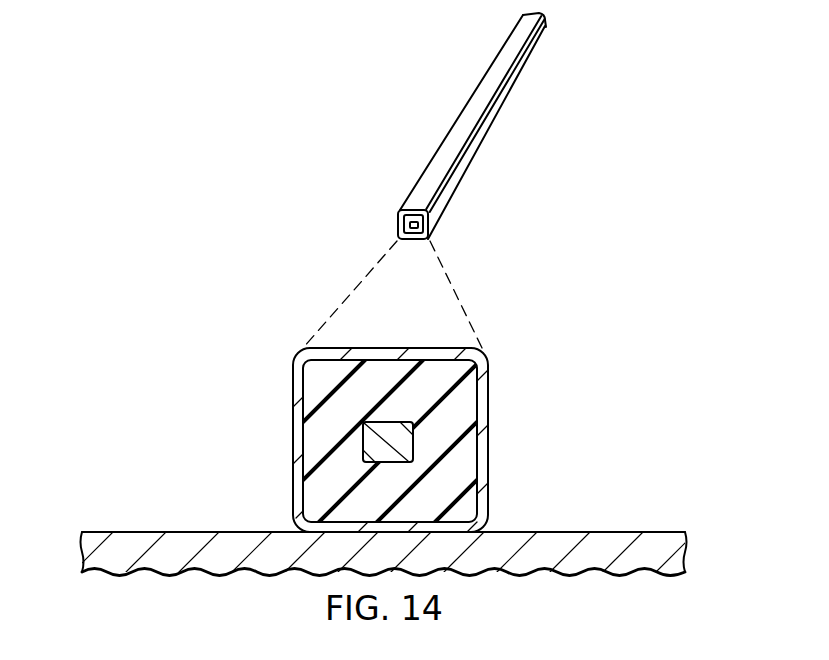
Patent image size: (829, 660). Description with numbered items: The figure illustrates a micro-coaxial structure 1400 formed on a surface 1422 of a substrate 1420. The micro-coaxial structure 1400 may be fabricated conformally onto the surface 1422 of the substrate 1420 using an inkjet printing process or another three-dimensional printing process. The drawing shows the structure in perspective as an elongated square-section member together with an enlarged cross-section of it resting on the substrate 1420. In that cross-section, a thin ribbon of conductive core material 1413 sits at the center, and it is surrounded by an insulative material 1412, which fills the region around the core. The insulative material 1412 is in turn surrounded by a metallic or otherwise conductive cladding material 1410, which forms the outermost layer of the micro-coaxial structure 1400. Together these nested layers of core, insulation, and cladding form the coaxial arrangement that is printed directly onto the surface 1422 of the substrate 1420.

The micro-coaxial structure 1400 is at (472, 113).
The conductive cladding material 1410 is at (300, 442).
The insulative material 1412 is at (392, 372).
The conductive core material 1413 is at (413, 440).
The substrate 1420 is at (73, 532).
The surface 1422 is at (615, 530).